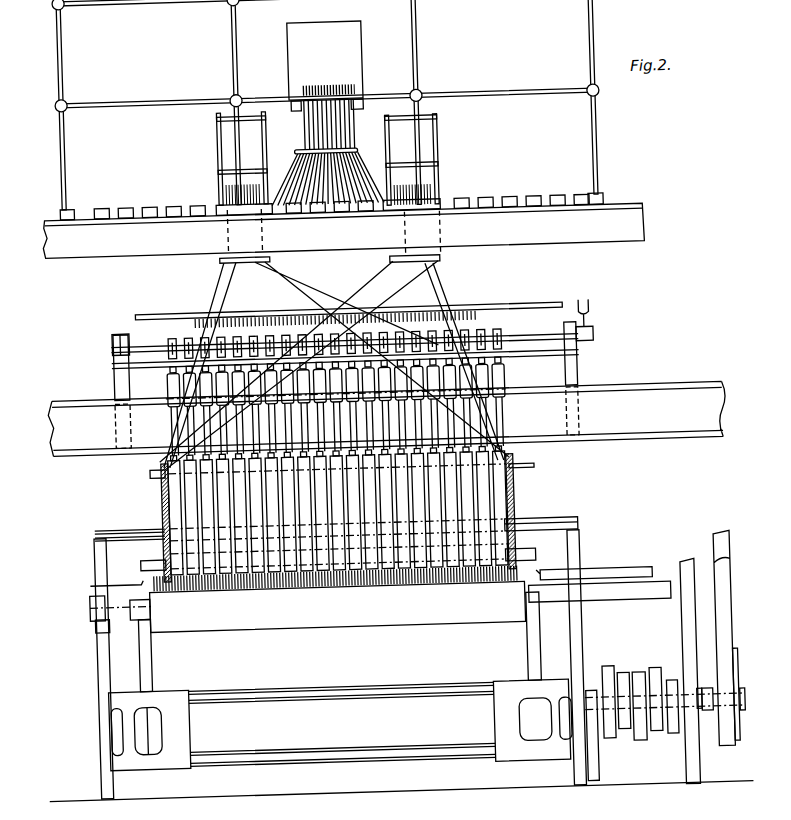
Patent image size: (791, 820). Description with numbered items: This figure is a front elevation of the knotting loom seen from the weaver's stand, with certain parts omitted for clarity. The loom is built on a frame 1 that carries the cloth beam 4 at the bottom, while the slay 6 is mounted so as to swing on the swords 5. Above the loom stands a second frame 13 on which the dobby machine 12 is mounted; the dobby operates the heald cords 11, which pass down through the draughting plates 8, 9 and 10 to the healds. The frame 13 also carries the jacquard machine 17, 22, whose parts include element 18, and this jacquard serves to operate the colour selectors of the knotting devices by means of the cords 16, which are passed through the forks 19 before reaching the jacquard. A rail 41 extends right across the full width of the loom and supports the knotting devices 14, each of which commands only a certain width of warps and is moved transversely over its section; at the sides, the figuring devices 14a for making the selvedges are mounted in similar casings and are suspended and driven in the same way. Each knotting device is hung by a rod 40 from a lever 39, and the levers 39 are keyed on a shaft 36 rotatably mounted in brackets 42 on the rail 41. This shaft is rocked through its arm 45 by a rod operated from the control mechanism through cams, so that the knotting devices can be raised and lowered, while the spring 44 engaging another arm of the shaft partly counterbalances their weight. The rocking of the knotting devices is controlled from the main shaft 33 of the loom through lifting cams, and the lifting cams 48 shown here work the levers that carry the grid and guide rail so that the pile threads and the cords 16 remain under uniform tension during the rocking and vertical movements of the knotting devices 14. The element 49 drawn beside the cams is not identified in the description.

The frame 1 is at (340, 662).
The cloth beam 4 is at (345, 617).
The swords 5 is at (144, 667).
The slay 6 is at (257, 587).
The draughting plate 8 is at (572, 528).
The draughting plate 9 is at (528, 464).
The draughting plate 10 is at (272, 256).
The heald cords 11 is at (295, 287).
The dobby machine 12 is at (227, 136).
The frame 13 is at (602, 209).
The knotting devices 14 is at (338, 510).
The figuring devices 14a is at (174, 503).
The cords 16 is at (453, 305).
The jacquard machine 17 is at (364, 62).
The jacquard machine 18 is at (327, 178).
The forks 19 is at (506, 315).
The jacquard machine 22 is at (364, 147).
The main shaft 33 is at (689, 701).
The shaft 36 is at (113, 337).
The levers 39 is at (168, 333).
The rod 40 is at (499, 361).
The rail 41 is at (387, 418).
The brackets 42 is at (126, 381).
The spring 44 is at (580, 360).
The arm 45 is at (591, 328).
The lifting cams 48 is at (643, 675).
The wheel 49 is at (710, 659).